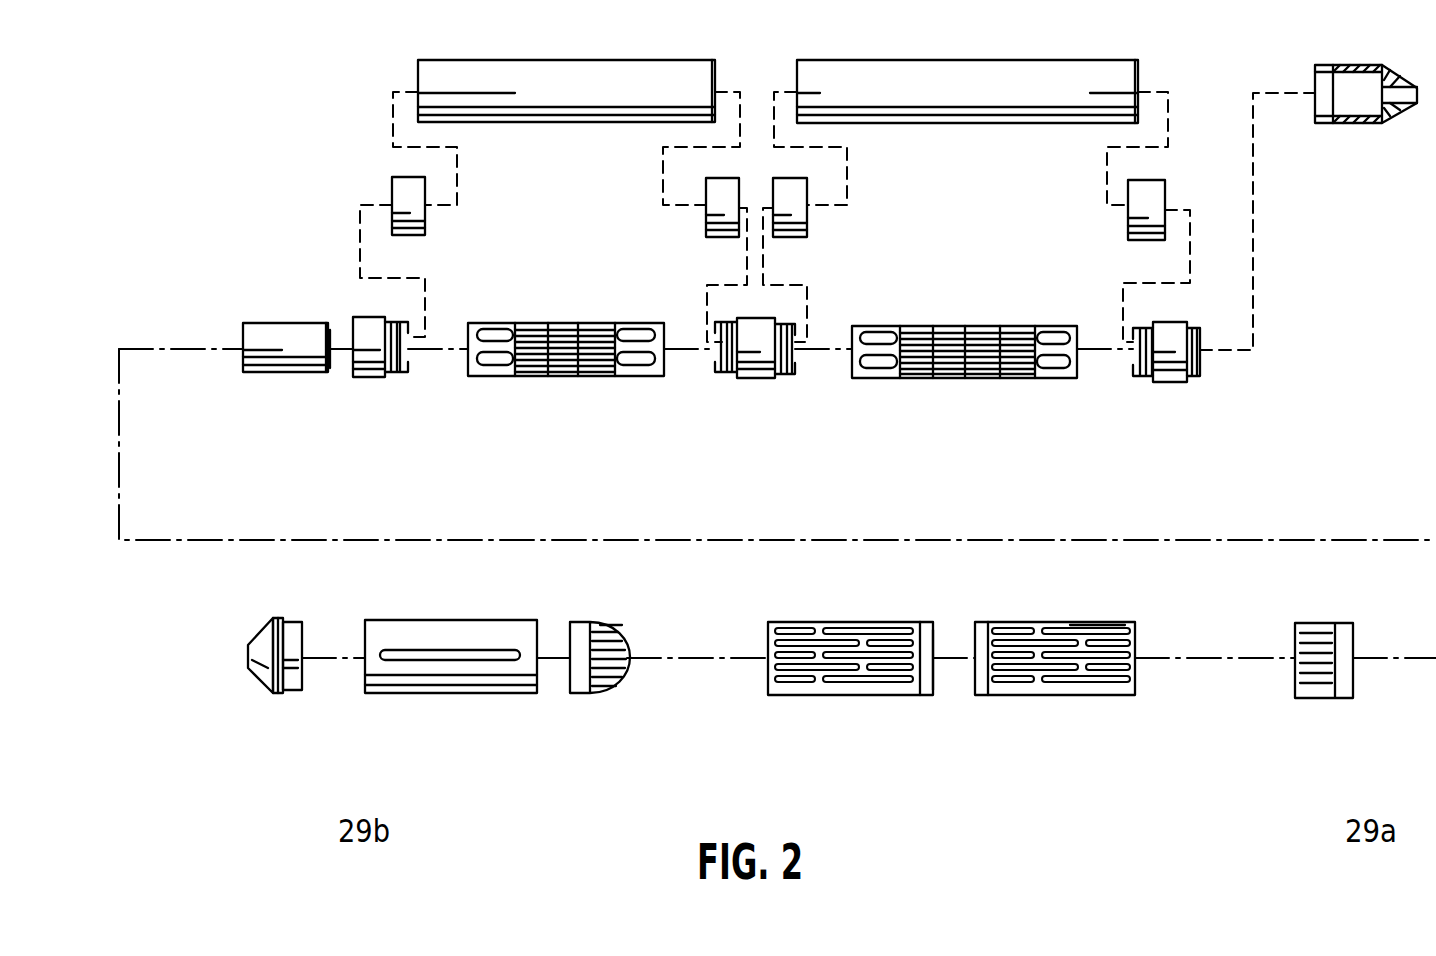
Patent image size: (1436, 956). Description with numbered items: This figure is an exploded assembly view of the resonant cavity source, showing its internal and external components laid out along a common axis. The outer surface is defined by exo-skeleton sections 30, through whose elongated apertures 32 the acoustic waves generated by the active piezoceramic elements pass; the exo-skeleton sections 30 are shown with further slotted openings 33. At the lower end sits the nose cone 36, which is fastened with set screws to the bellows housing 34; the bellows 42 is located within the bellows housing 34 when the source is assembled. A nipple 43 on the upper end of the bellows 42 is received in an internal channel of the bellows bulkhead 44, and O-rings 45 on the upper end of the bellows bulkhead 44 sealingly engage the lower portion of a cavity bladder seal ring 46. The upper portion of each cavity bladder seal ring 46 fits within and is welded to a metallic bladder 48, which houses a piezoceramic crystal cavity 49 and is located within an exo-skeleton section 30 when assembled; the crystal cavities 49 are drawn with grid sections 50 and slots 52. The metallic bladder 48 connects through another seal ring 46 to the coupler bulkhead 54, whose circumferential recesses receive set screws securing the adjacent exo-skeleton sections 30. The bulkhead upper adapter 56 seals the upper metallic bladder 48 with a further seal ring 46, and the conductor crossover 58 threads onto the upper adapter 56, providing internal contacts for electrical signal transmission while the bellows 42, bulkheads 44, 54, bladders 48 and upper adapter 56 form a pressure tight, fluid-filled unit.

The exo-skeleton section 30 is at (855, 696).
The elongated aperture 32 is at (612, 694).
The grid slot 33 is at (600, 621).
The bellows housing 34 is at (438, 693).
The nose cone 36 is at (255, 672).
The bellows 42 is at (283, 323).
The nipple 43 is at (336, 343).
The bellows bulkhead 44 is at (373, 378).
The O-ring 45 is at (393, 378).
The cavity bladder seal ring 46 is at (392, 195).
The metallic bladder 48 is at (613, 122).
The piezoceramic crystal cavity 49 is at (545, 323).
The grid section 50 is at (570, 377).
The slot 52 is at (482, 377).
The coupler bulkhead 54 is at (765, 380).
The bulkhead upper adapter 56 is at (1185, 384).
The conductor crossover 58 is at (1382, 125).